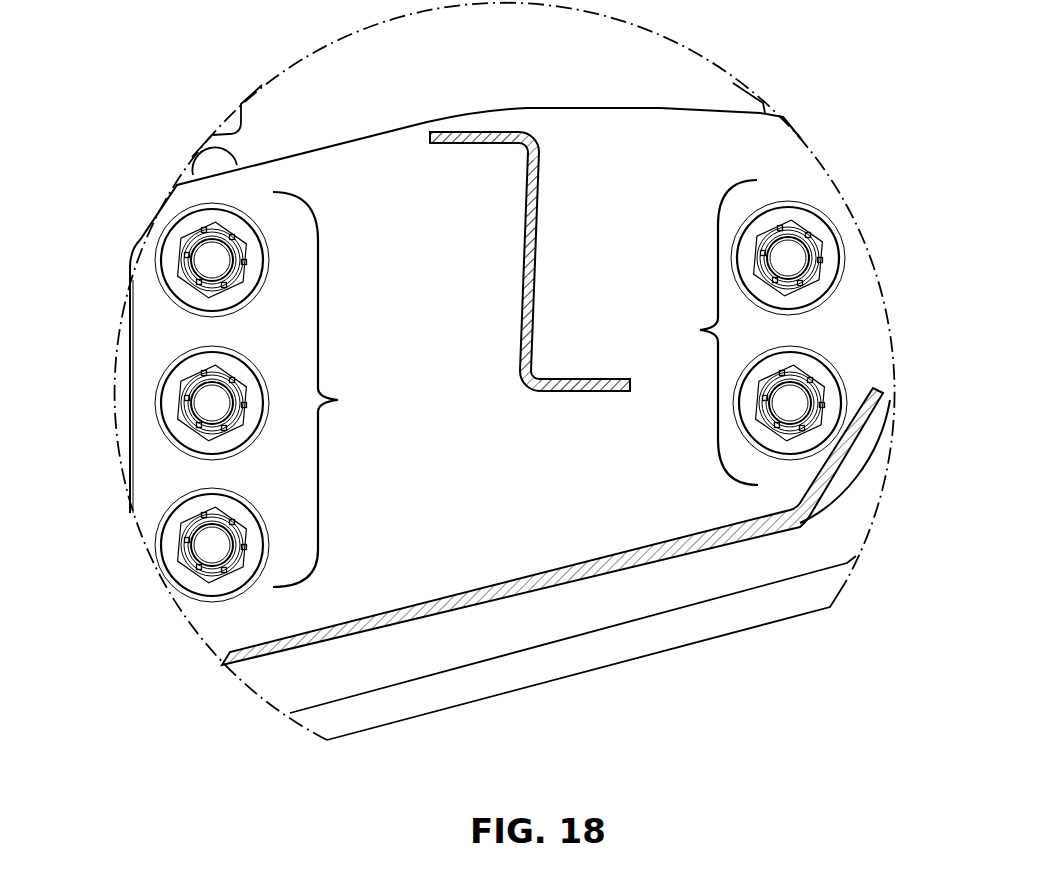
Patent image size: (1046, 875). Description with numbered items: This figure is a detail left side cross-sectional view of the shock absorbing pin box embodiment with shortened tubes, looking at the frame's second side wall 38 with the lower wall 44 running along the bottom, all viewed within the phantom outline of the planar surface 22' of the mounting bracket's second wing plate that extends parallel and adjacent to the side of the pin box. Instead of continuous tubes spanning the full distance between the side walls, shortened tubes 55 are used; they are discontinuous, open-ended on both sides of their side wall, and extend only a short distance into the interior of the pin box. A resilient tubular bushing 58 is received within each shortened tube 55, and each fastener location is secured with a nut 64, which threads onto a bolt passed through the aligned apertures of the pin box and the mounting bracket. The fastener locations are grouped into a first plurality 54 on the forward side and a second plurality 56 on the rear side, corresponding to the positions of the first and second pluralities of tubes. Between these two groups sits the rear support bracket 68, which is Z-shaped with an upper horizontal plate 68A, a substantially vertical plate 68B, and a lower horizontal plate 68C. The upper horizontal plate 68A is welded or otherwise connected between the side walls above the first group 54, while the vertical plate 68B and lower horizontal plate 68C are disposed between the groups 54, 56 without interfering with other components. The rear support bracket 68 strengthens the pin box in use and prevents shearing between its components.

The planar surface 22' is at (505, 371).
The second side wall 38 is at (433, 288).
The lower wall 44 is at (558, 572).
The first plurality of tubes 54 is at (328, 389).
The shortened tubes 55 is at (183, 212).
The second plurality of tubes 56 is at (706, 332).
The resilient tubular bushing 58 is at (178, 232).
The nut 64 is at (212, 258).
The rear support bracket 68 is at (535, 253).
The upper horizontal plate 68A is at (472, 142).
The vertical plate 68B is at (533, 196).
The lower horizontal plate 68C is at (575, 387).